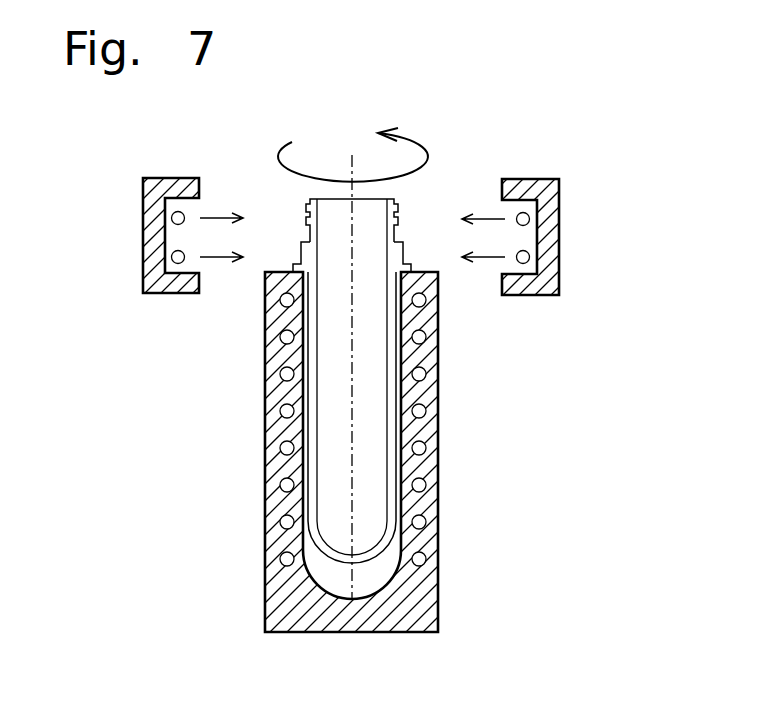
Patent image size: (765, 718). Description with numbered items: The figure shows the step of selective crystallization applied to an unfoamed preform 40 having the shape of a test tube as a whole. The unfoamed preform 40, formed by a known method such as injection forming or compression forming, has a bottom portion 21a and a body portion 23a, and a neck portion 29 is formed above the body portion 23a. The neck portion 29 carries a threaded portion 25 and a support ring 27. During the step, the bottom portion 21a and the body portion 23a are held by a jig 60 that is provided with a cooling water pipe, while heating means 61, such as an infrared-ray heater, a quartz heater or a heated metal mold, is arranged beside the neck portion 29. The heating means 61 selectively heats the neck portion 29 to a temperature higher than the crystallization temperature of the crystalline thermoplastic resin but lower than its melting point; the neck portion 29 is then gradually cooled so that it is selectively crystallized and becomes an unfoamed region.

The bottom portion 21a is at (352, 565).
The body portion 23a is at (390, 451).
The threaded portion 25 is at (394, 213).
The support ring 27 is at (411, 267).
The neck portion 29 is at (439, 151).
The unfoamed preform 40 is at (316, 558).
The jig 60 is at (437, 595).
The heating means 61 is at (143, 249).